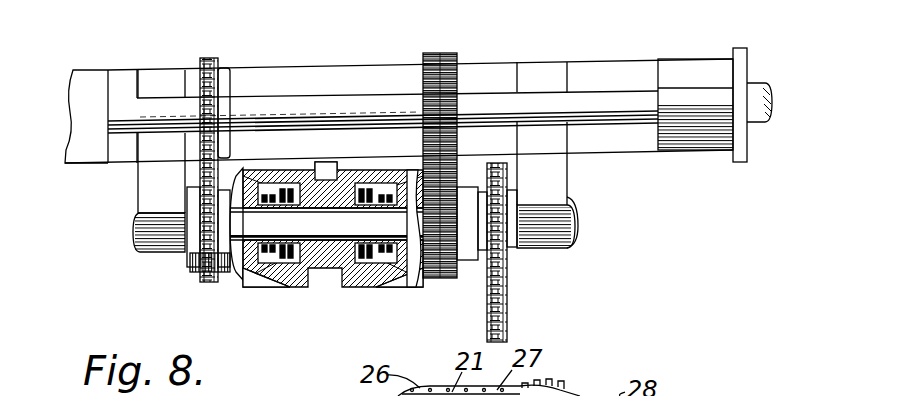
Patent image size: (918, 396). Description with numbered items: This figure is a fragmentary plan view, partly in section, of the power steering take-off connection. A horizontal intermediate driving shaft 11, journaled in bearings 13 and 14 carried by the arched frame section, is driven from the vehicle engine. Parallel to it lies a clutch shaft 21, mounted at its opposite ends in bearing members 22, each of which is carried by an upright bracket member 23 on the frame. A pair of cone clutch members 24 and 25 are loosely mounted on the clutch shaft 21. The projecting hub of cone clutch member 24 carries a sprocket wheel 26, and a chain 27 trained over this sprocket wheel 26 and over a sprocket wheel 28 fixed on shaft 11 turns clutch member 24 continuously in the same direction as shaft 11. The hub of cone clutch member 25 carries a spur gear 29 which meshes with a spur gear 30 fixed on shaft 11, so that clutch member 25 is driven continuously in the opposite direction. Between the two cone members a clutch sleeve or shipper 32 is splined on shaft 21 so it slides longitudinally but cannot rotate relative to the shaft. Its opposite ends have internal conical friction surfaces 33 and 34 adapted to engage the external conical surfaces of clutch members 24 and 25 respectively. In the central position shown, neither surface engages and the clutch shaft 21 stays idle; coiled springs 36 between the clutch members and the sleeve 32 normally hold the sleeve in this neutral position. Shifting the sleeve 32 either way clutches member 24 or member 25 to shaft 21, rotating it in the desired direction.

The horizontal intermediate driving shaft 11 is at (600, 95).
The bearing 13 is at (82, 88).
The bearing 14 is at (692, 72).
The clutch shaft 21 is at (385, 227).
The bearing member 22 is at (152, 257).
The bracket member 23 is at (148, 182).
The cone clutch member 24 is at (247, 273).
The cone clutch member 25 is at (418, 268).
The sprocket wheel 26 is at (200, 268).
The chain 27 is at (200, 90).
The sprocket wheel 28 is at (218, 62).
The spur gear 29 is at (453, 277).
The spur gear 30 is at (440, 80).
The clutch sleeve or shipper 32 is at (333, 257).
The internal conical friction surface 33 is at (270, 287).
The internal conical friction surface 34 is at (405, 273).
The coiled springs 36 is at (353, 195).